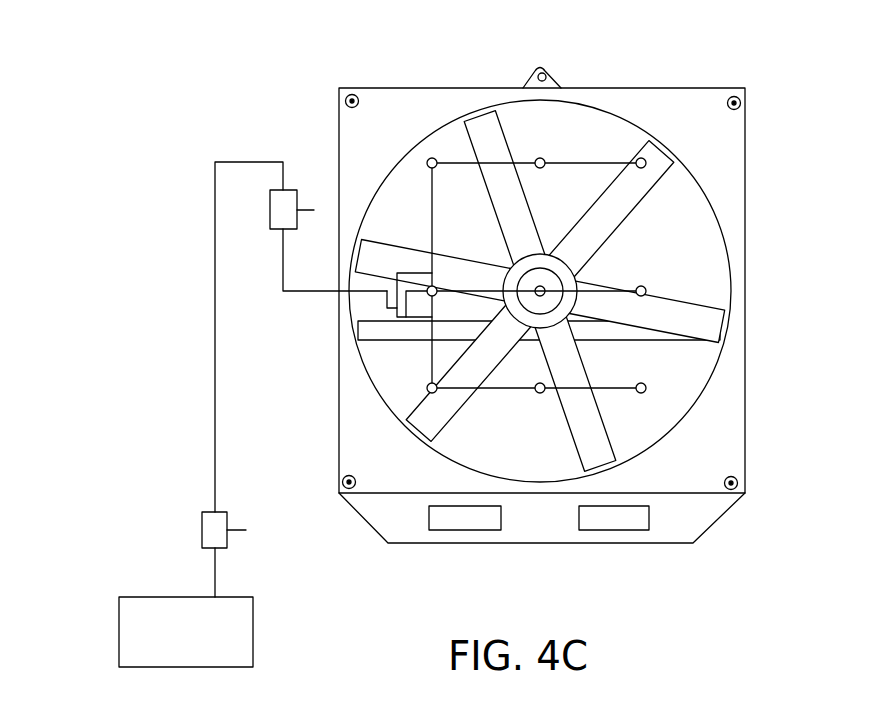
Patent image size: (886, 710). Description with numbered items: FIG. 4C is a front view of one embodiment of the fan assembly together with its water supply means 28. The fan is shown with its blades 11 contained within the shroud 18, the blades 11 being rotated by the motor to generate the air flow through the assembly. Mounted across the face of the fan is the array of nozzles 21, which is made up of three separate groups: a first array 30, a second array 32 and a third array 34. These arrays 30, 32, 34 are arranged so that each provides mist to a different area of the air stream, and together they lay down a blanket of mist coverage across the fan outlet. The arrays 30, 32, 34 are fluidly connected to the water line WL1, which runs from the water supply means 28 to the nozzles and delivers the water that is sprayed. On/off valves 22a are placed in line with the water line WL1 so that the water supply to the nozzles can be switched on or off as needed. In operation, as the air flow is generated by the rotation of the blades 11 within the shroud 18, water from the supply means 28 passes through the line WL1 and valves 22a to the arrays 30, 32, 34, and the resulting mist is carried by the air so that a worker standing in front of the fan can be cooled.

The blades 11 is at (493, 135).
The shroud 18 is at (684, 385).
The array of nozzles 21 is at (648, 160).
The on/off valve 22a is at (270, 210).
The water supply means 28 is at (119, 632).
The first array 30 is at (603, 163).
The second array 32 is at (603, 285).
The third array 34 is at (615, 388).
The water line WL1 is at (215, 300).